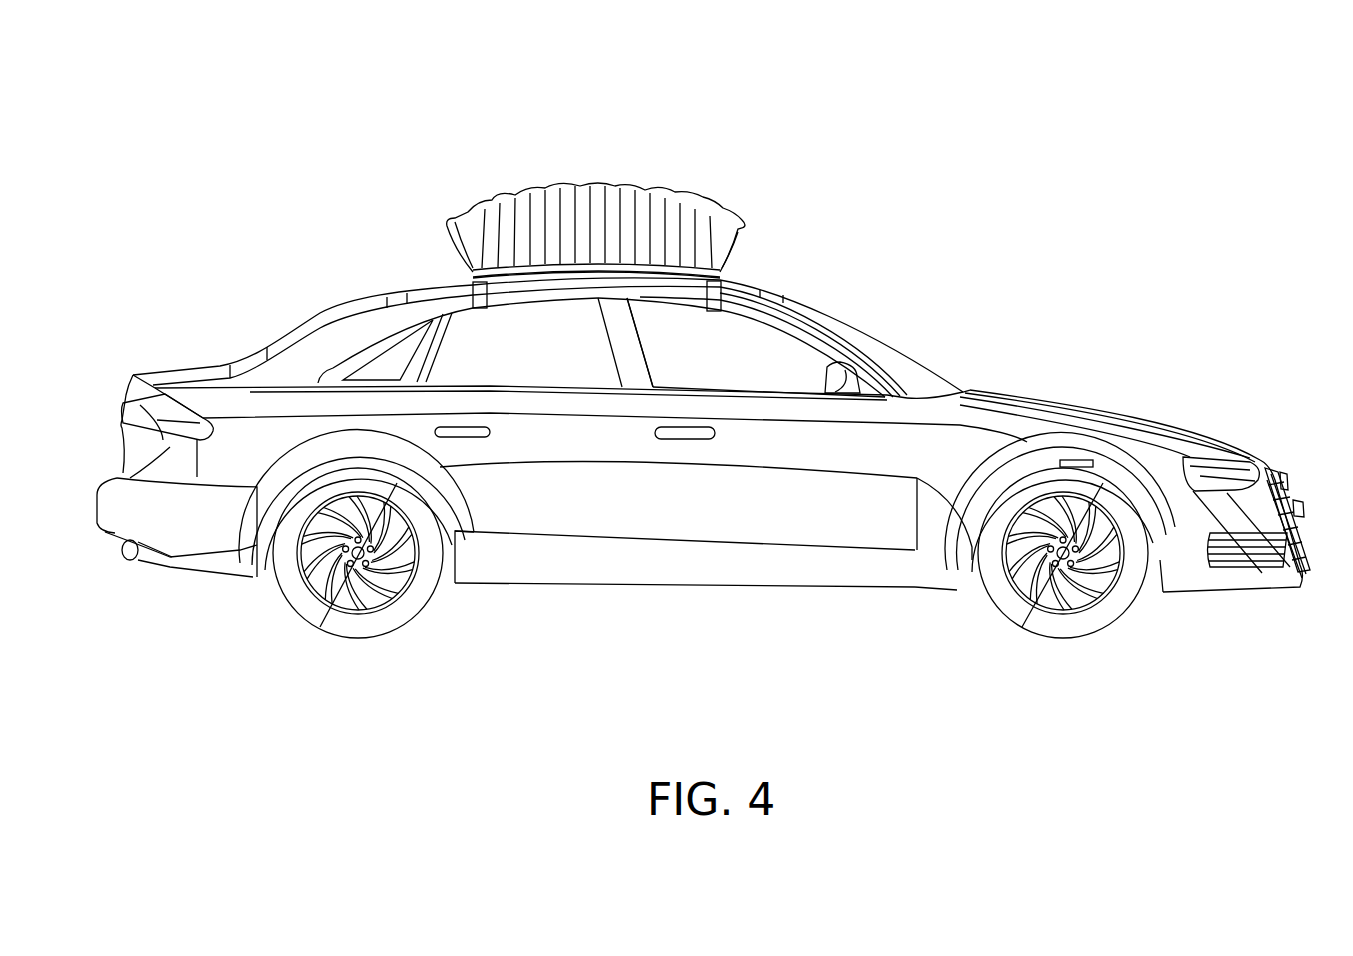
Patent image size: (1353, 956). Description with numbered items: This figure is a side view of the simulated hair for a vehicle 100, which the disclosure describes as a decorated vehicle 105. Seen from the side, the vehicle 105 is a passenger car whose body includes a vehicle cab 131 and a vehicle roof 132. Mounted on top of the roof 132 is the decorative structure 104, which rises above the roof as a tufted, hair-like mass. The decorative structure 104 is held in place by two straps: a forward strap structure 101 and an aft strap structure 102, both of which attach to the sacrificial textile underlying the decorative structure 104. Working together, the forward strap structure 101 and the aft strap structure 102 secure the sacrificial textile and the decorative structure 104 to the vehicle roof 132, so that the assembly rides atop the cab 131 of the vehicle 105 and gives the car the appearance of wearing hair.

The simulated hair for a vehicle 100 is at (1172, 137).
The forward strap structure 101 is at (720, 298).
The aft strap structure 102 is at (480, 308).
The decorative structure 104 is at (557, 227).
The vehicle 105 is at (1000, 423).
The cab 131 is at (778, 355).
The roof 132 is at (422, 291).